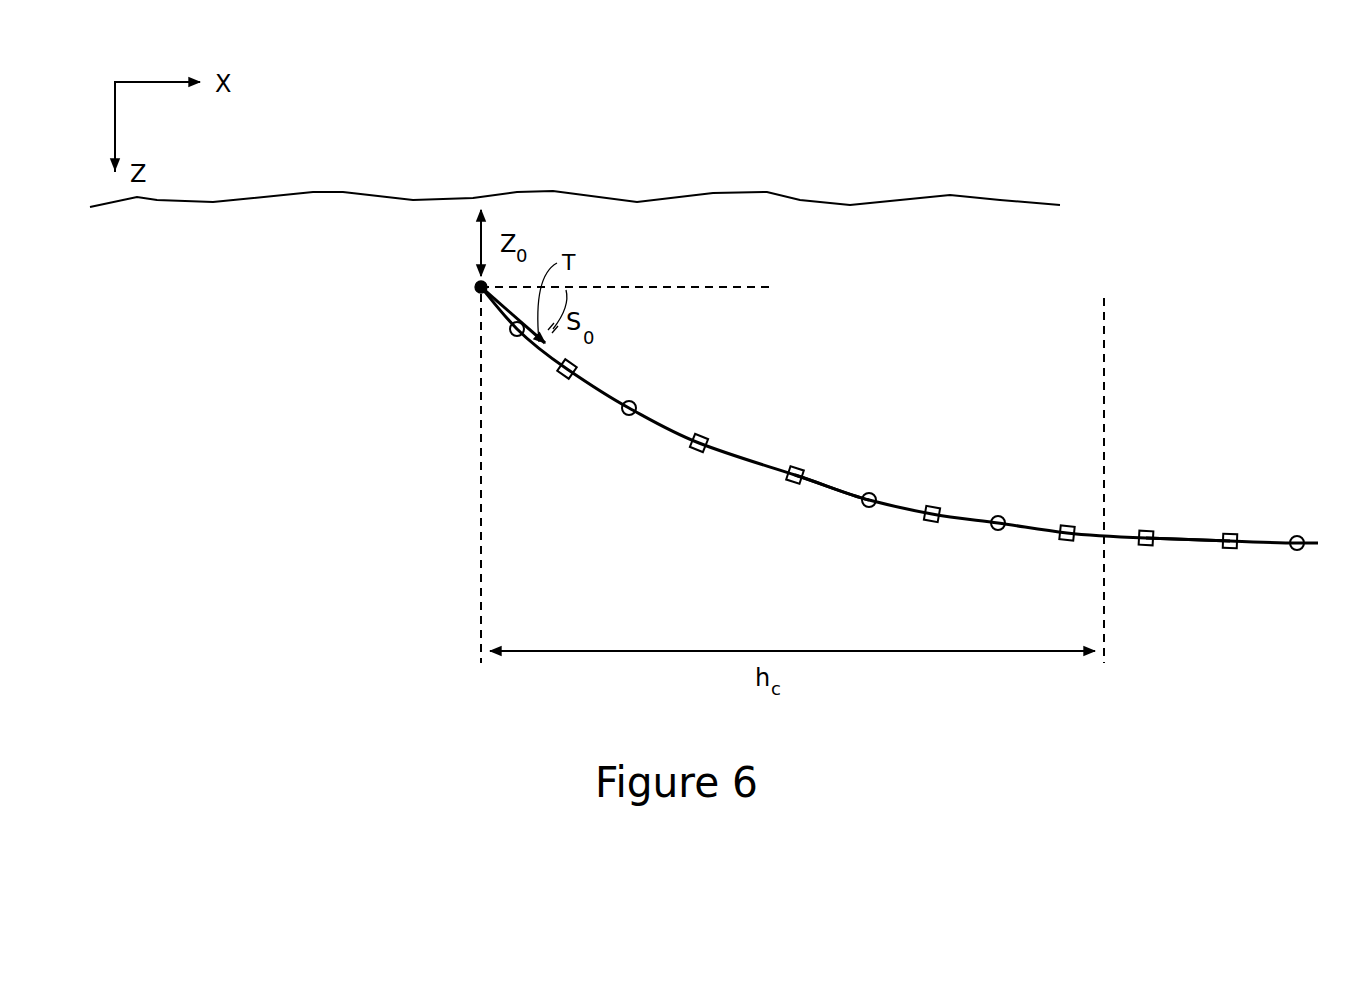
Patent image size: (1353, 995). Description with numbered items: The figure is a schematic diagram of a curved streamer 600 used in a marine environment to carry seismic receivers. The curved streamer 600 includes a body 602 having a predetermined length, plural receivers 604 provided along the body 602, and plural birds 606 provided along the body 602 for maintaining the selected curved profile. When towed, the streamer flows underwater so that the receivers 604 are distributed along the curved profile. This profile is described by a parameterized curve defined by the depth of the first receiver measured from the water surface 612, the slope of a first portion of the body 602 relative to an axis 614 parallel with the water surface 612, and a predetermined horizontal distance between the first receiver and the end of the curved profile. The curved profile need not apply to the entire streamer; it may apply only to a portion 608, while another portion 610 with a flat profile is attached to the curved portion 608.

The curved streamer 600 is at (600, 510).
The body 602 is at (736, 452).
The receivers 604 is at (636, 406).
The birds 606 is at (573, 364).
The portion with the curved profile 608 is at (834, 492).
The portion with a flat profile 610 is at (1188, 537).
The water surface 612 is at (712, 193).
The axis 614 is at (705, 287).